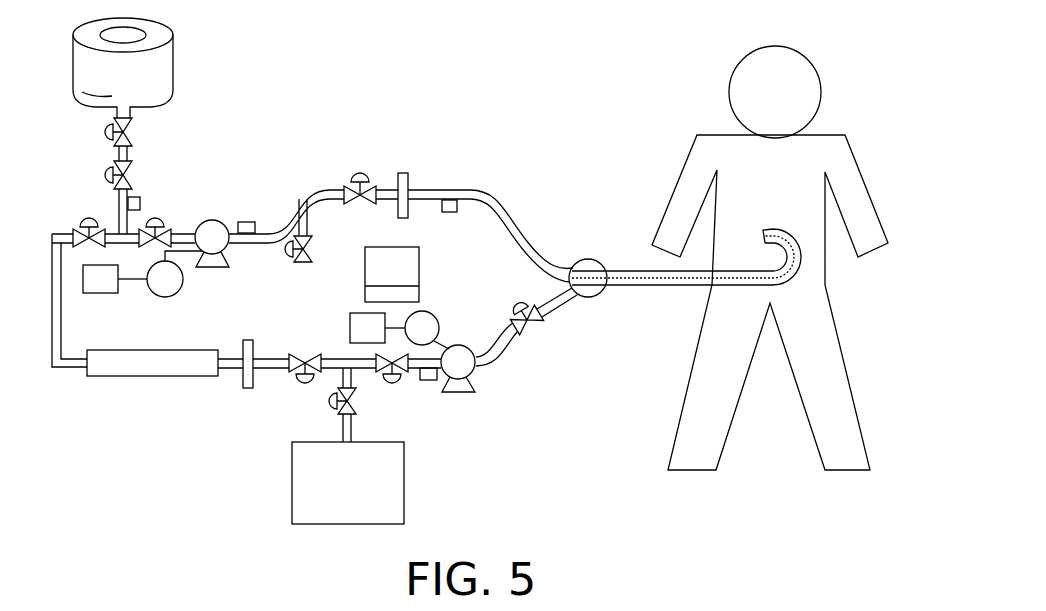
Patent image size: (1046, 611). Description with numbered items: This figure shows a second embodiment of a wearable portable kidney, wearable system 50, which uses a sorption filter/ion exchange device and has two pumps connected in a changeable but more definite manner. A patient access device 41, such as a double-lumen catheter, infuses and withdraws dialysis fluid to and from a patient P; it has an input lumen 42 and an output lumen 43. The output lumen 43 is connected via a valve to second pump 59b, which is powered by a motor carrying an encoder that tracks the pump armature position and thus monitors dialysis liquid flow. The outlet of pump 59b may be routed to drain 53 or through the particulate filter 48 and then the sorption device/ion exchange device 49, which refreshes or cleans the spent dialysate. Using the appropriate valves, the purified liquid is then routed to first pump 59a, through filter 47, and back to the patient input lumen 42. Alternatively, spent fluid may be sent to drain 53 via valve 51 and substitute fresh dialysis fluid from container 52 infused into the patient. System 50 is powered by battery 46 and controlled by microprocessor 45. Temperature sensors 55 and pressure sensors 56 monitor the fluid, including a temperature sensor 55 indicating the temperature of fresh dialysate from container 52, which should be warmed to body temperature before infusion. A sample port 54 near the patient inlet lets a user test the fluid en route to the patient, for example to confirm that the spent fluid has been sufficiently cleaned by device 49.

The wearable system 50 is at (64, 208).
The container 52 is at (175, 62).
The temperature sensor 55 is at (141, 203).
The pressure sensor 56 is at (243, 221).
The first pump 59a is at (224, 250).
The second pump 59b is at (478, 376).
The valve 51 is at (351, 158).
The sample port 54 is at (320, 243).
The filter 47 is at (403, 172).
The particulate filter 48 is at (253, 342).
The sorption device/ion exchange device 49 is at (183, 377).
The drain 53 is at (404, 470).
The microprocessor 45 is at (420, 263).
The battery 46 is at (365, 298).
The input lumen 42 is at (531, 233).
The output lumen 43 is at (547, 303).
The patient access device 41 is at (652, 288).
The patient P is at (838, 155).